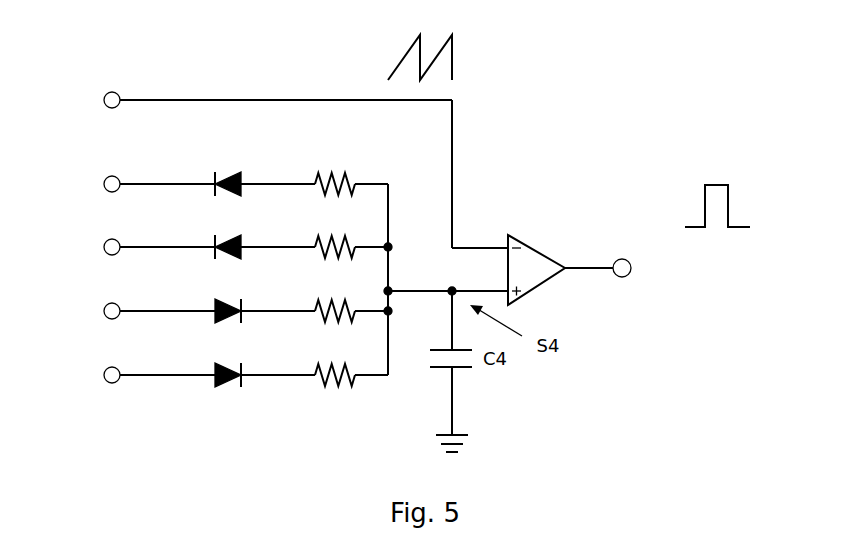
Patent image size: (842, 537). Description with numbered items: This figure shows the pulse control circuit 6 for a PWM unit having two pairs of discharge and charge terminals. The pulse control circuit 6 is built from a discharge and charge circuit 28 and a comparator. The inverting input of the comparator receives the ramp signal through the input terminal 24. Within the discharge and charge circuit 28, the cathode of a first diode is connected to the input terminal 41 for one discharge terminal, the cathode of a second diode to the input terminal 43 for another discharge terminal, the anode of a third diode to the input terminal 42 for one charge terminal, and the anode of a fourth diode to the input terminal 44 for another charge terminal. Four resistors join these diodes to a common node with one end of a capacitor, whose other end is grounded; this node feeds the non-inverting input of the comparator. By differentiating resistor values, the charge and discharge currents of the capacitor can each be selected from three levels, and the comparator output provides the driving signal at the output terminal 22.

The input terminal 24 is at (114, 91).
The input terminal 43 is at (114, 175).
The input terminal 41 is at (114, 239).
The input terminal 42 is at (114, 303).
The input terminal 44 is at (114, 367).
The discharge and charge circuit 28 is at (354, 438).
The pulse control circuit 6 is at (531, 158).
The output terminal S5 22 is at (622, 278).